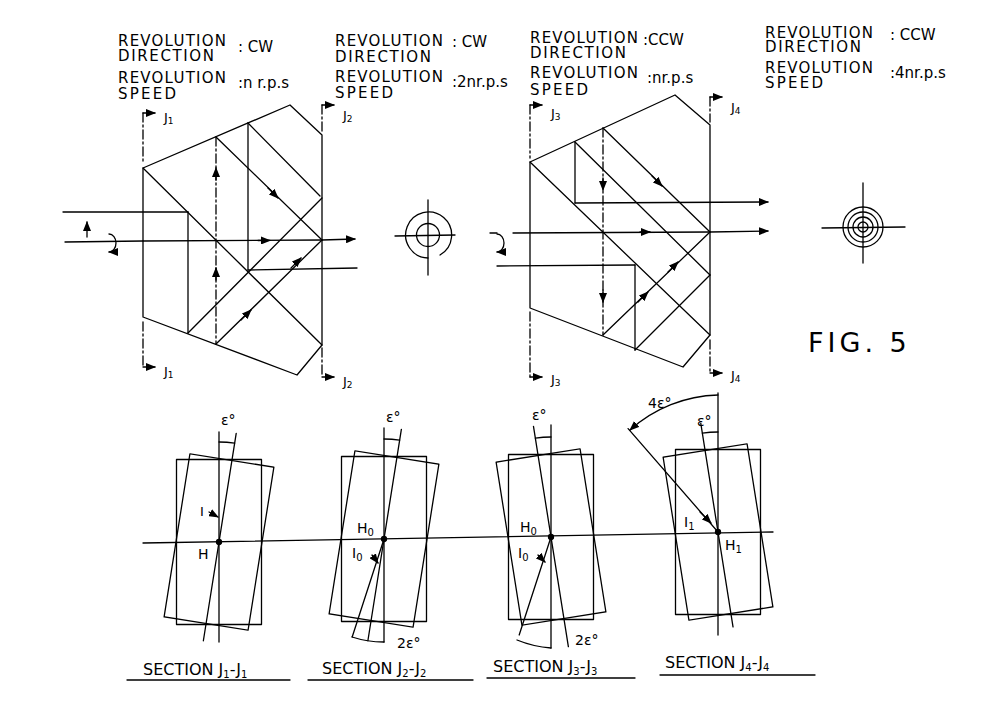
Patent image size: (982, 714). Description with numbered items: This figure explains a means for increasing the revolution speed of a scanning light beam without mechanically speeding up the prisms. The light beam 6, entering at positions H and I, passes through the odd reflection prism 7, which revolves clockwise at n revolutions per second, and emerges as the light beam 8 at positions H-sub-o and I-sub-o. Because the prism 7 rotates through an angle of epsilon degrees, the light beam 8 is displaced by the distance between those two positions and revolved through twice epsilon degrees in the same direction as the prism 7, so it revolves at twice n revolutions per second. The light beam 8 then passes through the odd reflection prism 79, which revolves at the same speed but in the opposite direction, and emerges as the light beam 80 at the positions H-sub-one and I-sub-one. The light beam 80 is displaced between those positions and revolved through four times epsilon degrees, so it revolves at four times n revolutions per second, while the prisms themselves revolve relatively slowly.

The light beam 6 is at (115, 182).
The odd reflection prism 7 is at (261, 240).
The light beam 8 is at (449, 191).
The odd reflection prism 79 is at (644, 231).
The light beam 80 is at (863, 185).